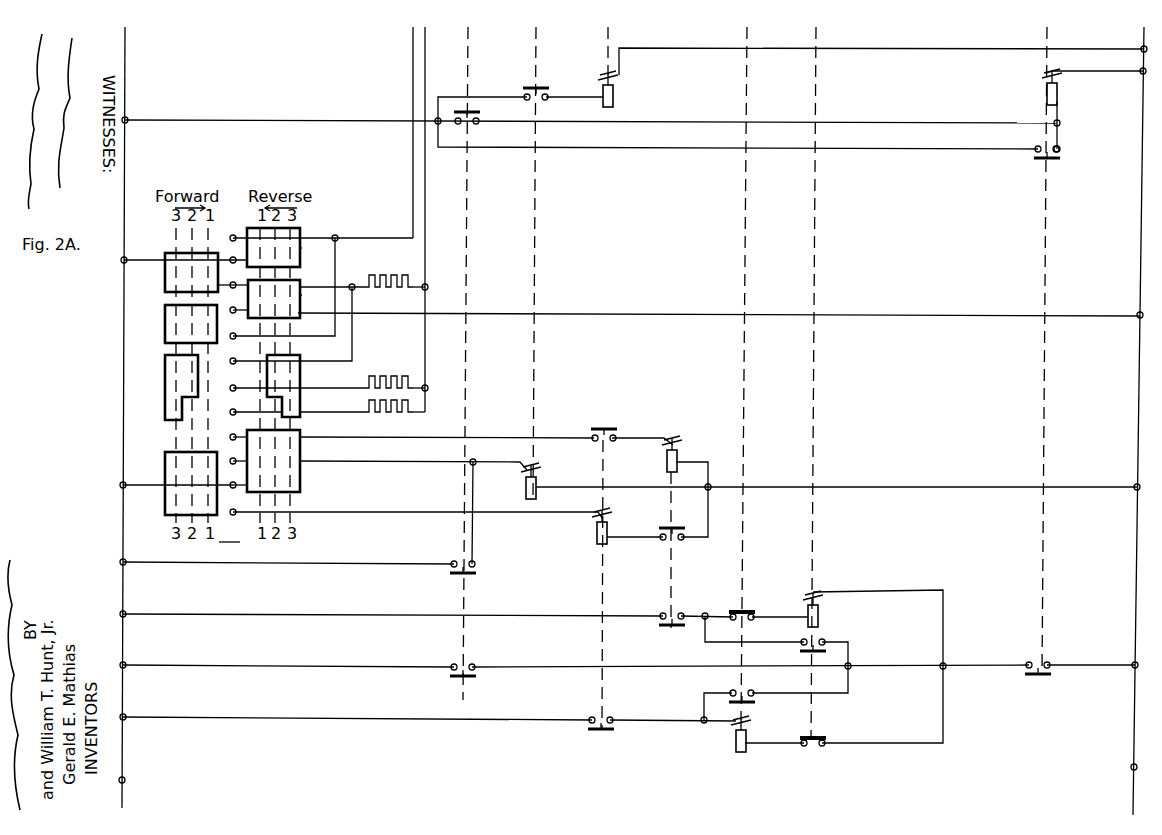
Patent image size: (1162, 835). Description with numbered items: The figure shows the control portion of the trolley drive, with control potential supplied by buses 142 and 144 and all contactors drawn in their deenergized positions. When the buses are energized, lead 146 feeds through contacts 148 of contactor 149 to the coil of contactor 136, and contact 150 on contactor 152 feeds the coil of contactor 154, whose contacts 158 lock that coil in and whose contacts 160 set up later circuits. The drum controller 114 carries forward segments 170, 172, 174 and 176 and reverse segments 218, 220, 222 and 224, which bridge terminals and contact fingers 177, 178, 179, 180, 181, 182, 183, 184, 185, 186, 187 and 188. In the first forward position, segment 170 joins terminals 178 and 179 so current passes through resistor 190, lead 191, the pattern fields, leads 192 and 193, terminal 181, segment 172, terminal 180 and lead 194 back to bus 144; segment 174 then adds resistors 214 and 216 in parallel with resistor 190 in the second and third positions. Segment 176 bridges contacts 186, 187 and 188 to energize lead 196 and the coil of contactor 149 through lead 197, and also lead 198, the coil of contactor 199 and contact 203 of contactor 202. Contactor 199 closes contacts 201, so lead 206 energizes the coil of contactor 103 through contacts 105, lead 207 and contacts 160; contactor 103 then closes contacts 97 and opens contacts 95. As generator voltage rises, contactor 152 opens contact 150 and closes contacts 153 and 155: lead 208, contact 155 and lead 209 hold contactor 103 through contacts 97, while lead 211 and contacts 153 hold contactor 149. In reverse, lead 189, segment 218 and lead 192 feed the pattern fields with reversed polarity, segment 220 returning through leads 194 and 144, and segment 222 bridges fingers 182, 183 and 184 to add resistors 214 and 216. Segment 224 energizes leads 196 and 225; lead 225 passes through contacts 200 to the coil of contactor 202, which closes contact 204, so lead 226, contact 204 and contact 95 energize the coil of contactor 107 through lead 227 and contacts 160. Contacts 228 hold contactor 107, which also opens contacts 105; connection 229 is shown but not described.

The contacts 95 is at (747, 609).
The contacts 97 is at (747, 692).
The contactor 103 is at (737, 747).
The contacts 105 is at (812, 758).
The contactor 107 is at (818, 405).
The drum controller 114 is at (232, 533).
The contactor 136 is at (614, 95).
The lead 142 is at (121, 437).
The lead 144 is at (1136, 450).
The lead 146 is at (281, 120).
The contacts 148 is at (529, 78).
The contactor 149 is at (535, 392).
The contact 150 is at (478, 117).
The contactor 152 is at (466, 275).
The contacts 153 is at (471, 577).
The contactor 154 is at (1060, 88).
The contact 155 is at (471, 680).
The contacts 158 is at (1060, 158).
The contacts 160 is at (1037, 681).
The controller segment 170 is at (163, 285).
The controller segment 172 is at (163, 330).
The controller segment 174 is at (163, 385).
The controller segment 176 is at (163, 465).
The controller contact finger 177 is at (240, 232).
The terminal 178 is at (273, 247).
The terminal 179 is at (215, 274).
The terminal 180 is at (274, 299).
The terminal 181 is at (249, 323).
The contact finger 182 is at (282, 298).
The contact finger 183 is at (291, 336).
The contact finger 184 is at (297, 397).
The controller contact finger 185 is at (297, 420).
The contact 186 is at (256, 453).
The contact 187 is at (256, 478).
The contact 188 is at (249, 472).
The lead 189 is at (164, 260).
The resistor 190 is at (390, 273).
The lead 191 is at (425, 258).
The lead 192 is at (413, 82).
The lead 193 is at (337, 270).
The lead 194 is at (394, 318).
The lead 196 is at (400, 466).
The lead 197 is at (855, 487).
The lead 198 is at (378, 512).
The contactor 199 is at (606, 590).
The contacts 200 is at (614, 434).
The contacts 201 is at (613, 729).
The contactor 202 is at (672, 522).
The contact 203 is at (678, 534).
The contact 204 is at (670, 632).
The lead 206 is at (310, 721).
The lead 207 is at (870, 745).
The lead 208 is at (288, 668).
The lead 209 is at (540, 668).
The lead 211 is at (320, 565).
The resistor 214 is at (402, 380).
The resistor 216 is at (398, 413).
The segment 218 is at (317, 255).
The segment 220 is at (317, 305).
The segment 222 is at (300, 386).
The segment 224 is at (290, 461).
The lead 225 is at (408, 437).
The lead 226 is at (248, 614).
The lead 227 is at (882, 590).
The contacts 228 is at (818, 640).
The conductor 229 is at (751, 645).